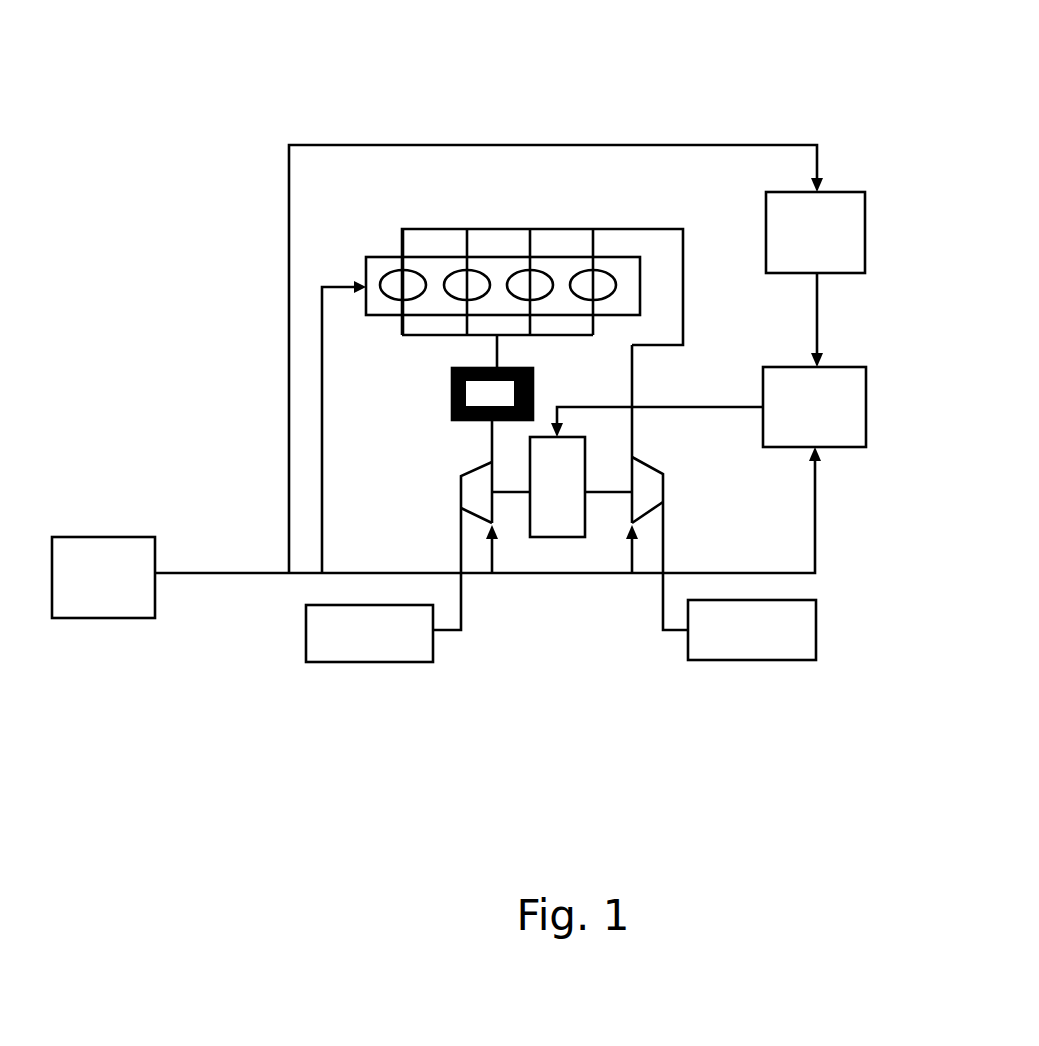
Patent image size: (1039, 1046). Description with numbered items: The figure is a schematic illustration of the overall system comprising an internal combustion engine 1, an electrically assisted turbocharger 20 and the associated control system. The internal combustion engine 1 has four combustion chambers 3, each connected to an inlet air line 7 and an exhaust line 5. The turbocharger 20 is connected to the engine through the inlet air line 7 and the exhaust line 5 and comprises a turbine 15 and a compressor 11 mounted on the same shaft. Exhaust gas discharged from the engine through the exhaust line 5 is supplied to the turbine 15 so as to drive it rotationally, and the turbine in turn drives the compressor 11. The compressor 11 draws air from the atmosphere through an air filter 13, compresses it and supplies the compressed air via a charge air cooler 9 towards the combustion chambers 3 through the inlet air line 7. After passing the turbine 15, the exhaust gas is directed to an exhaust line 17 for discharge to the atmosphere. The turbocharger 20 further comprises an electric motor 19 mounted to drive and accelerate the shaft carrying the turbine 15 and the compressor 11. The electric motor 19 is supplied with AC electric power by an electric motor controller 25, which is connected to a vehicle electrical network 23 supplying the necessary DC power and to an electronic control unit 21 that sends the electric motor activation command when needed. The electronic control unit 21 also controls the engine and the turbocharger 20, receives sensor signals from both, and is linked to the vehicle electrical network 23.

The internal combustion engine 1 is at (401, 198).
The combustion chambers 3 is at (467, 285).
The exhaust line 5 is at (572, 229).
The inlet air line 7 is at (442, 335).
The charge air cooler 9 is at (452, 385).
The compressor 11 is at (484, 519).
The air filter 13 is at (320, 662).
The turbine 15 is at (652, 505).
The exhaust line 17 is at (817, 613).
The electric motor 19 is at (557, 537).
The turbocharger 20 is at (560, 611).
The electronic control unit 21 is at (70, 618).
The vehicle electrical network 23 is at (865, 192).
The electric motor controller 25 is at (866, 397).